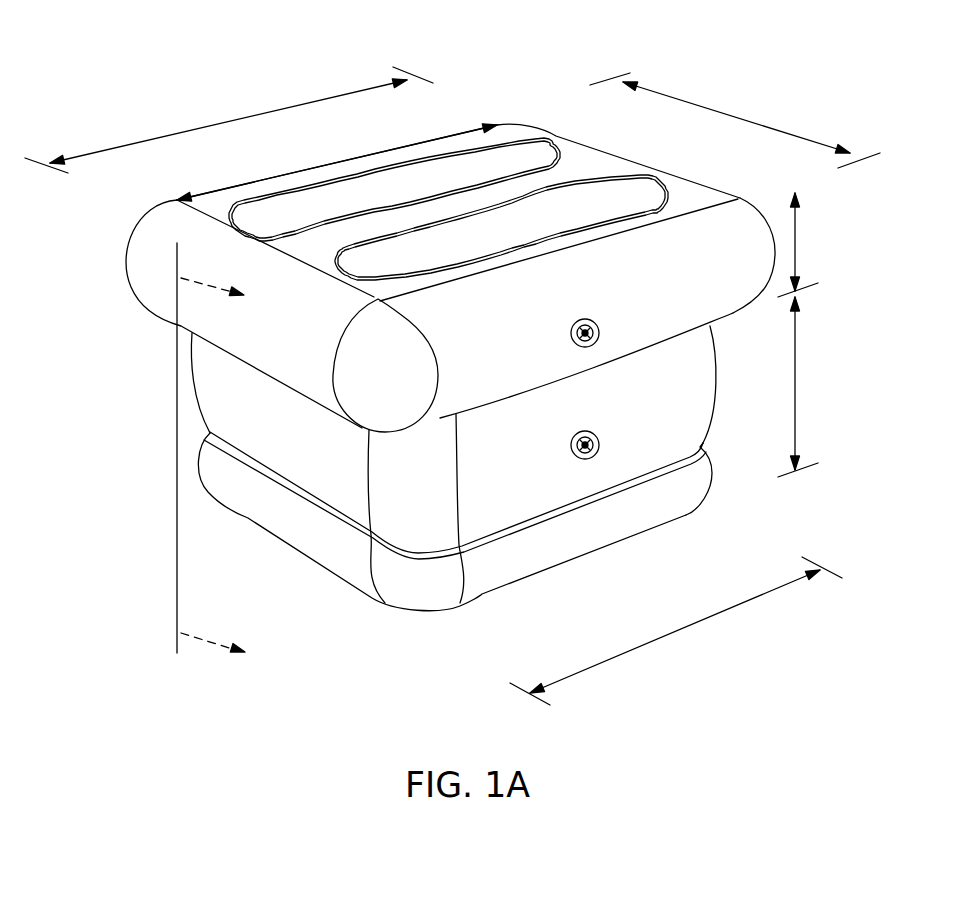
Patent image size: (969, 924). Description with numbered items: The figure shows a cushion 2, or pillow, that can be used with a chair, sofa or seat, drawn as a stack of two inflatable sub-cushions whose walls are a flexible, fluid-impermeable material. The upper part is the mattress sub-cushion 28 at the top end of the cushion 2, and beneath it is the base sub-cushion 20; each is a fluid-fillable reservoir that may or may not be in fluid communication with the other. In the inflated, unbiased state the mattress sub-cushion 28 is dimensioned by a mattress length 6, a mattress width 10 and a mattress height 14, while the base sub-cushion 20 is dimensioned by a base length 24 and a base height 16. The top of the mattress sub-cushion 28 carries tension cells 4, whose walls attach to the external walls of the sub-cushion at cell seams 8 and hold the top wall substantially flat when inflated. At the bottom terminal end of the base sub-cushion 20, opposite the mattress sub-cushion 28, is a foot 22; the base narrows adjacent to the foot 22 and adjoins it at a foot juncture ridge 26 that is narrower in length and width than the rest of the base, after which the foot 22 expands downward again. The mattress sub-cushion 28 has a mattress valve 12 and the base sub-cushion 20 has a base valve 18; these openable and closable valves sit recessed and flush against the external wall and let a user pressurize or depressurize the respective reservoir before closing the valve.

The cushion 2 is at (170, 50).
The cells 4 is at (387, 260).
The mattress length 6 is at (246, 116).
The cell seams 8 is at (600, 178).
The mattress width 10 is at (745, 118).
The mattress valve 12 is at (588, 319).
The mattress height 14 is at (805, 245).
The base height 16 is at (809, 387).
The base valve 18 is at (610, 443).
The base sub-cushion 20 is at (700, 447).
The foot 22 is at (587, 537).
The base length 24 is at (703, 620).
The foot juncture ridge 26 is at (262, 468).
The mattress sub-cushion 28 is at (142, 234).